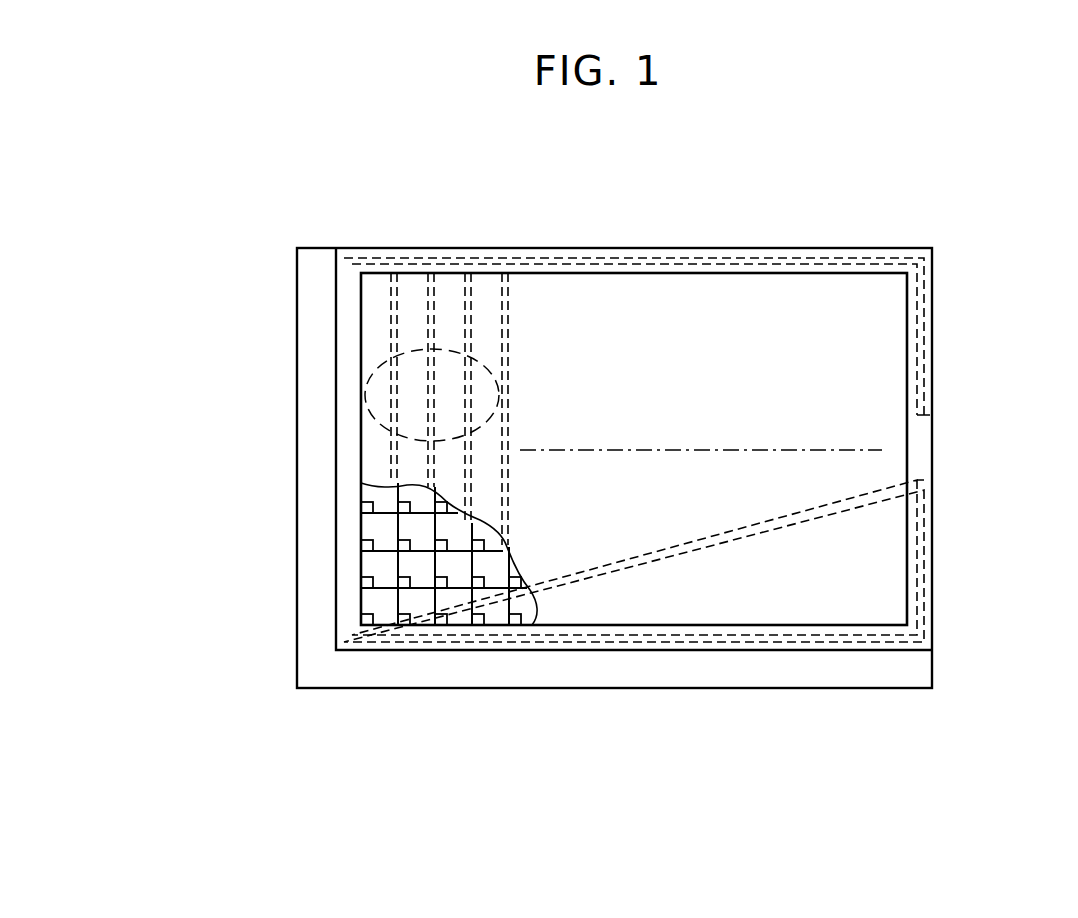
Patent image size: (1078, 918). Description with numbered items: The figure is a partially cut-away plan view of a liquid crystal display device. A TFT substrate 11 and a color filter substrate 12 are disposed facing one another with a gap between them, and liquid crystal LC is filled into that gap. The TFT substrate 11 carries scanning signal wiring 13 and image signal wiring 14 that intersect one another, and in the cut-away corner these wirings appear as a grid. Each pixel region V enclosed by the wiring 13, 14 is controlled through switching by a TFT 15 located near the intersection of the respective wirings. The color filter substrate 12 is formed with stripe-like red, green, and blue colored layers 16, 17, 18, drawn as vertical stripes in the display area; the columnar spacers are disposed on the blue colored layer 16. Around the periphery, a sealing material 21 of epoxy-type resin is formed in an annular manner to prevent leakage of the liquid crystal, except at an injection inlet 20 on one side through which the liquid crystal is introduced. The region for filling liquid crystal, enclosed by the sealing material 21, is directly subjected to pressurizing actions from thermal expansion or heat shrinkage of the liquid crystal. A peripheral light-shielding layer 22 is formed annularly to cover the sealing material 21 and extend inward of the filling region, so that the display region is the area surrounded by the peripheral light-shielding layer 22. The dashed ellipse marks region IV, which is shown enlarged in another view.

The TFT substrate 11 is at (782, 672).
The color filter substrate 12 is at (823, 547).
The scanning signal wiring 13 is at (387, 588).
The image signal wiring 14 is at (397, 563).
The TFT 15 is at (365, 512).
The blue colored layer 16 is at (373, 297).
The colored layer 17 is at (412, 297).
The colored layer 18 is at (448, 297).
The injection inlet 20 is at (932, 447).
The sealing material 21 is at (920, 311).
The peripheral light-shielding layer 22 is at (770, 252).
The region IV is at (387, 362).
The liquid crystal LC is at (457, 600).
The pixel region V is at (497, 585).